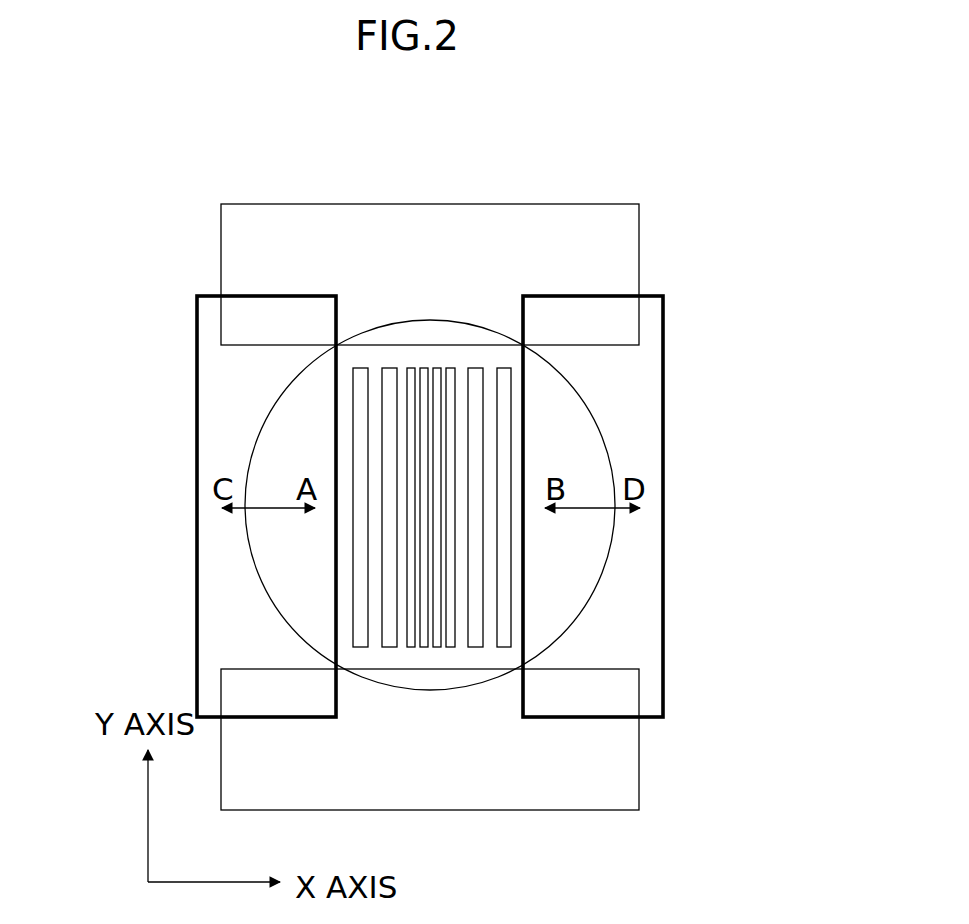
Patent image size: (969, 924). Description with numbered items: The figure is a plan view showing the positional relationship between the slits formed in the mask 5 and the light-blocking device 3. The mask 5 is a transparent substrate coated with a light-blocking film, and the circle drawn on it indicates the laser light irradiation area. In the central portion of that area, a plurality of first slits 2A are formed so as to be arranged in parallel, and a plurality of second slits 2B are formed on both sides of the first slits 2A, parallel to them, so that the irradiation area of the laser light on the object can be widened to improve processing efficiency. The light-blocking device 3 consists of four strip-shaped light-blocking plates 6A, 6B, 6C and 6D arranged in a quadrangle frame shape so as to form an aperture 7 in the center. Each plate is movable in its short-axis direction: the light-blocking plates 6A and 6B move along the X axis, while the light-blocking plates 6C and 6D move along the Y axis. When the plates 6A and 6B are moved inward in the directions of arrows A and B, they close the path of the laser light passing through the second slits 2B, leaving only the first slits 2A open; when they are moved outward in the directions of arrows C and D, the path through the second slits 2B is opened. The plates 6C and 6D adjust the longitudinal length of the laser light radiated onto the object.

The light-blocking device 3 is at (180, 208).
The first slits 2A is at (453, 376).
The second slits 2B is at (386, 640).
The mask 5 is at (490, 362).
The light-blocking plate 6A is at (218, 402).
The light-blocking plate 6B is at (645, 390).
The light-blocking plate 6C is at (253, 226).
The light-blocking plate 6D is at (582, 790).
The aperture 7 is at (338, 601).